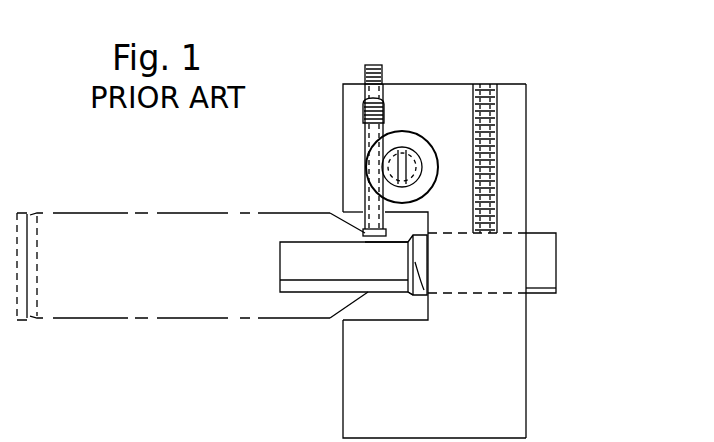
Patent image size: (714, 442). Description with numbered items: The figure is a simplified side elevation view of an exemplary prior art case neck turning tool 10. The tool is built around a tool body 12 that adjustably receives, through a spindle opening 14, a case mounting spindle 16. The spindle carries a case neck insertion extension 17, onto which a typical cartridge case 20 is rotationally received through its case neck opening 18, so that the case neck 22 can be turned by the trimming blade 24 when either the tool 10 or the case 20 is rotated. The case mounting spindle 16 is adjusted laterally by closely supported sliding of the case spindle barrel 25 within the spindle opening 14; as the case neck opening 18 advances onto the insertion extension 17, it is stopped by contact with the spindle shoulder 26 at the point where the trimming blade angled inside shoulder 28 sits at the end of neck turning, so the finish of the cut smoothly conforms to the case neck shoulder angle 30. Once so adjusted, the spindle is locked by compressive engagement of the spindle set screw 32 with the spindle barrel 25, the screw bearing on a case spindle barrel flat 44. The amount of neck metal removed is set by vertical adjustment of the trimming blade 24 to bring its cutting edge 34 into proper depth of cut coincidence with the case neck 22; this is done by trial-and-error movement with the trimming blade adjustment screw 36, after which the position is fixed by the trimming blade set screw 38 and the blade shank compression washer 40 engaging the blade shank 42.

The case neck turning tool 10 is at (552, 85).
The tool body 12 is at (518, 365).
The spindle opening 14 is at (499, 232).
The case mounting spindle 16 is at (550, 267).
The case neck insertion extension 17 is at (280, 241).
The case neck opening 18 is at (428, 256).
The cartridge case 20 is at (196, 319).
The case neck 22 is at (393, 293).
The trimming blade 24 is at (343, 205).
The case spindle barrel 25 is at (543, 278).
The spindle shoulder 26 is at (427, 295).
The trimming blade angled inside shoulder 28 is at (365, 234).
The case neck shoulder angle 30 is at (352, 303).
The spindle set screw 32 is at (497, 215).
The cutting edge 34 is at (375, 240).
The trimming blade adjustment screw 36 is at (383, 68).
The trimming blade set screw 38 is at (413, 148).
The blade shank compression washer 40 is at (416, 131).
The blade shank 42 is at (365, 130).
The case spindle barrel flat 44 is at (540, 233).